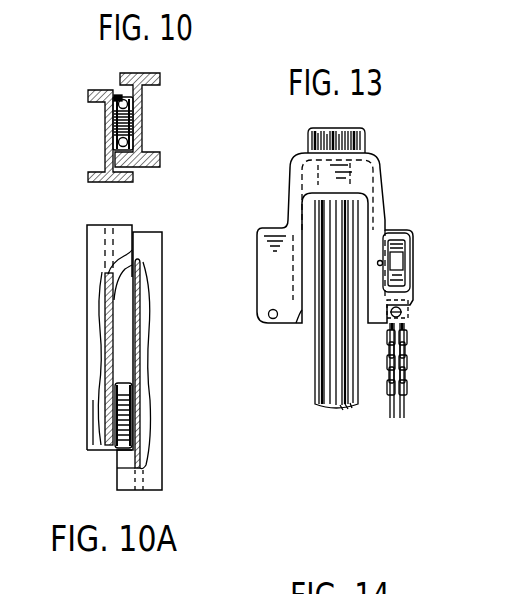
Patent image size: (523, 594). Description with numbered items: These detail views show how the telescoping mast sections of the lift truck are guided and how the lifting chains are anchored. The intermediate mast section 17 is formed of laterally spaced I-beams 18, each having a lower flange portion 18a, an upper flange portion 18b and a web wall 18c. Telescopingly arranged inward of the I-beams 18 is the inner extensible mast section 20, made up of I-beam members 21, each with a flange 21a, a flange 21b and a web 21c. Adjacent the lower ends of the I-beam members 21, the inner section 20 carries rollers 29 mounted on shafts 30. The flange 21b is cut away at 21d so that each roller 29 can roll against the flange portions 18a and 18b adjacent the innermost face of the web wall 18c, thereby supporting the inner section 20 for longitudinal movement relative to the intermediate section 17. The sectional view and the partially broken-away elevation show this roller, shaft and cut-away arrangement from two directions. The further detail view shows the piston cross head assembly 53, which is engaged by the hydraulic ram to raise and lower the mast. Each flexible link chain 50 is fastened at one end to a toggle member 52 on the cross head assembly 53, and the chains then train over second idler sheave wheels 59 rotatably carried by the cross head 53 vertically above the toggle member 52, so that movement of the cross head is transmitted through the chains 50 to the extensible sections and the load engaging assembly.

In FIG. 10, the intermediate mast section 17 is at (162, 121).
In FIG. 10A, the intermediate mast section 17 is at (168, 361).
In FIG. 10, the I-beam 18 is at (162, 121).
In FIG. 10A, the I-beam 18 is at (168, 361).
In FIG. 10, the flange portion 18a is at (157, 167).
In FIG. 10A, the flange portion 18a is at (152, 480).
In FIG. 10, the flange portion 18b is at (153, 72).
In FIG. 10, the web wall 18c is at (140, 110).
In FIG. 10A, the web wall 18c is at (142, 363).
In FIG. 10, the inner extensible mast section 20 is at (89, 136).
In FIG. 10A, the inner extensible mast section 20 is at (122, 337).
In FIG. 10, the I-beam member 21 is at (89, 136).
In FIG. 10A, the I-beam member 21 is at (122, 337).
In FIG. 10, the flange of I-beam member 21 21a is at (97, 182).
In FIG. 10A, the flange of I-beam member 21 21a is at (66, 425).
In FIG. 10, the flange of I-beam member 21 21b is at (92, 90).
In FIG. 10A, the flange of I-beam member 21 21b is at (122, 275).
In FIG. 10, the web of I-beam member 21 21c is at (105, 137).
In FIG. 10A, the web of I-beam member 21 21c is at (112, 357).
In FIG. 10A, the cut-away portion 21d is at (123, 294).
In FIG. 10, the roller 29 is at (118, 96).
In FIG. 10, the shaft 30 is at (142, 127).
In FIG. 10A, the shaft 30 is at (122, 413).
In FIG. 13, the flexible link chain 50 is at (408, 390).
In FIG. 13, the toggle member 52 is at (415, 308).
In FIG. 13, the piston cross head assembly 53 is at (394, 177).
In FIG. 13, the second idler sheave wheel 59 is at (386, 254).